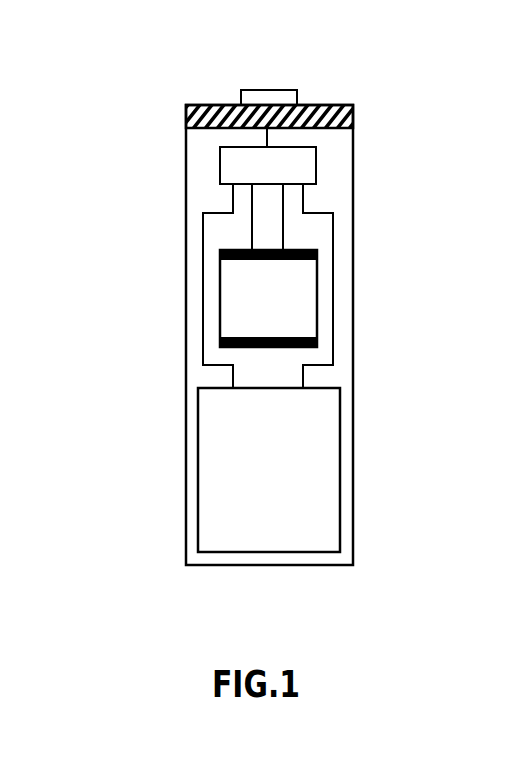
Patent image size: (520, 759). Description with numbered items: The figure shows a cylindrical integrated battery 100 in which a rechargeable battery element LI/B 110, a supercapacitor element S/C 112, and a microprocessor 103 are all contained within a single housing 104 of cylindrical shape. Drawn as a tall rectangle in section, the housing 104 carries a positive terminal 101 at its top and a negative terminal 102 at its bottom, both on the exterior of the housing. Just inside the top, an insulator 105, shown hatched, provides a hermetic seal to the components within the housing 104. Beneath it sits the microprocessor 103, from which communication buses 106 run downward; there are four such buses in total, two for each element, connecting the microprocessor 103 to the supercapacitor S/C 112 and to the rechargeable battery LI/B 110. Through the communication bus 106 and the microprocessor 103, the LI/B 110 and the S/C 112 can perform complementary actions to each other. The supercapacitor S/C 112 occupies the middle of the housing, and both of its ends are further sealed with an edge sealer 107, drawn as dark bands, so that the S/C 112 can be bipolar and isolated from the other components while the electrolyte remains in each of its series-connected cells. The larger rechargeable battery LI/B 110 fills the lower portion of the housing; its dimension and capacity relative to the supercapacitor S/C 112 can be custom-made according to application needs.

The integrated battery 100 is at (85, 39).
The positive terminal 101 is at (260, 90).
The negative terminal 102 is at (260, 565).
The microprocessor 103 is at (285, 178).
The housing 104 is at (186, 189).
The insulator 105 is at (186, 110).
The communication buses 106 is at (333, 233).
The edge sealer 107 is at (220, 252).
The rechargeable battery element 110 is at (323, 475).
The supercapacitor element 112 is at (317, 303).